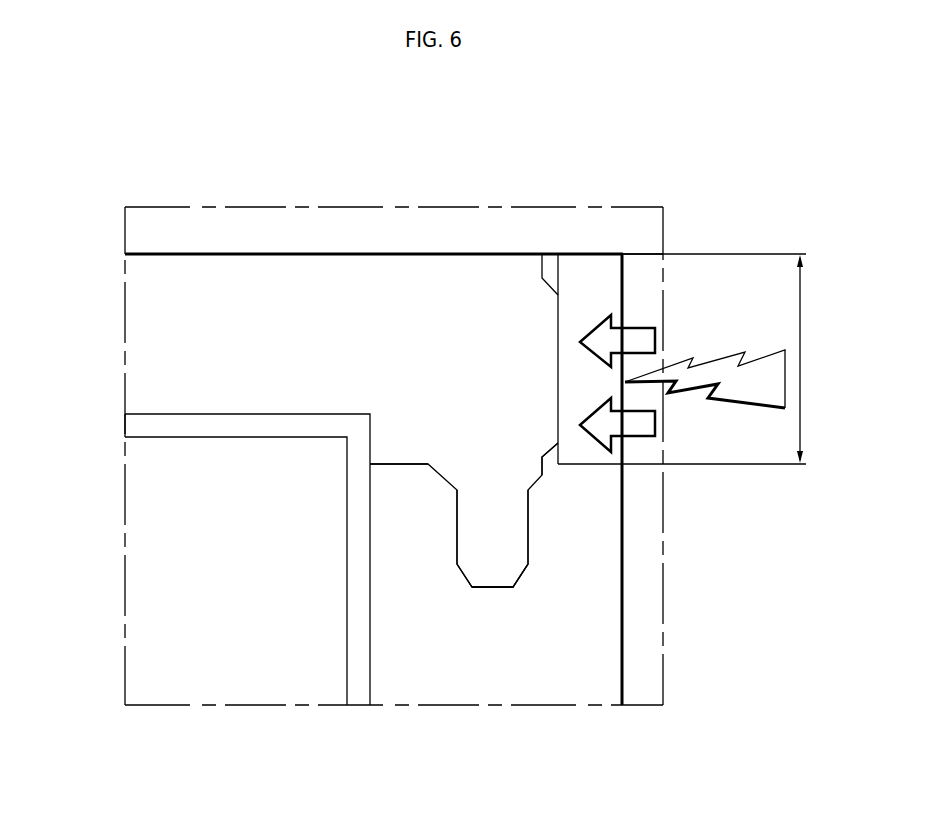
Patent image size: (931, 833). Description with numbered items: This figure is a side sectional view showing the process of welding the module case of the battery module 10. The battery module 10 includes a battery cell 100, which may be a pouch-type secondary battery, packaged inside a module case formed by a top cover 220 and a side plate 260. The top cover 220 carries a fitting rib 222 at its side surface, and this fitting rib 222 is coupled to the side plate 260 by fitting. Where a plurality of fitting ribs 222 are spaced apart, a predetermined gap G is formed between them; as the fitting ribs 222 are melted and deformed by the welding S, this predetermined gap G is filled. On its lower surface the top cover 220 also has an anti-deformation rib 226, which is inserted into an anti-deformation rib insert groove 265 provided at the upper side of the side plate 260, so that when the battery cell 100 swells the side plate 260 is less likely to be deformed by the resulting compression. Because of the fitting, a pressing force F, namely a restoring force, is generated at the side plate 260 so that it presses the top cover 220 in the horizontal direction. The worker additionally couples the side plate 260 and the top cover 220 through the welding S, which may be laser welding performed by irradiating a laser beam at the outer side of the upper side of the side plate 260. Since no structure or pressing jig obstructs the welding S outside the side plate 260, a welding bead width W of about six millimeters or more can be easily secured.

The battery module 10 is at (387, 400).
The battery cell 100 is at (146, 542).
The top cover 220 is at (146, 353).
The fitting rib 222 is at (550, 332).
The anti-deformation rib 226 is at (492, 568).
The side plate 260 is at (425, 677).
The anti-deformation rib insert groove 265 is at (512, 587).
The predetermined gap G is at (549, 273).
The pressing force F is at (645, 342).
The welding S is at (733, 355).
The welding bead width W is at (721, 359).